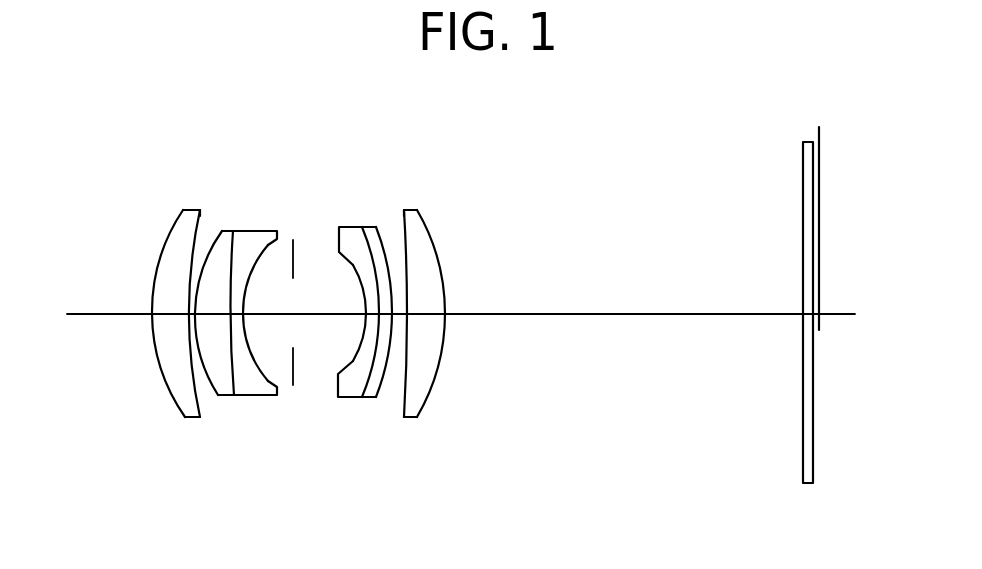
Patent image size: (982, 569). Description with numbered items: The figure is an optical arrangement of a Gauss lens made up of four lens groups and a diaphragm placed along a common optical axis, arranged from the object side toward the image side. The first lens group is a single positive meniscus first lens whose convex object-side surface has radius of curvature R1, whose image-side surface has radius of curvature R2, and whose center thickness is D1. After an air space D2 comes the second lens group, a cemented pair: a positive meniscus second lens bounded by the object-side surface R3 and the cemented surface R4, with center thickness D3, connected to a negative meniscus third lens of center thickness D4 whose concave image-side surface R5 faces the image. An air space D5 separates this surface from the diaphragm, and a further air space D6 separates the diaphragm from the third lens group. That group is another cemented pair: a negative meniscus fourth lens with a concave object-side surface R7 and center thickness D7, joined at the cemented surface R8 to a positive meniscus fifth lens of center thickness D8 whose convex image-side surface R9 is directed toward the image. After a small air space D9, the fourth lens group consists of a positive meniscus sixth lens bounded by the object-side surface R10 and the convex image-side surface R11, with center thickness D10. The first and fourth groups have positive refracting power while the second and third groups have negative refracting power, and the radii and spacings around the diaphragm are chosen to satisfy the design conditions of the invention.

The radius of curvature of object-side surface of first lens R1 is at (180, 222).
The radius of curvature of image-side surface of first lens R2 is at (192, 208).
The radius of curvature of surface of second lens on side of object R3 is at (216, 236).
The radius of curvature of surface of second lens on side of image R4 is at (245, 229).
The radius of curvature of surface of third lens on side of image R5 is at (267, 238).
The radius of curvature of surface of fourth lens on side of object R7 is at (348, 248).
The radius of curvature of surface of fourth lens on side of image R8 is at (362, 226).
The radius of curvature of surface of fifth lens on side of image R9 is at (382, 230).
The radius of curvature of object-side surface of sixth lens R10 is at (414, 210).
The radius of curvature of image-side surface of sixth lens R11 is at (424, 222).
The center thickness of first lens D1 is at (168, 338).
The air space between first lens and second lens D2 is at (210, 397).
The center thickness of second lens D3 is at (228, 397).
The center thickness of third lens D4 is at (245, 390).
The air space between surface of third lens on side of image and diaphragm D5 is at (276, 315).
The air space between diaphragm and surface of fourth lens on side of object D6 is at (326, 315).
The center thickness of fourth lens D7 is at (352, 395).
The center thickness of fifth lens D8 is at (378, 398).
The air space between fifth lens and sixth lens D9 is at (397, 399).
The center thickness of sixth lens D10 is at (437, 366).